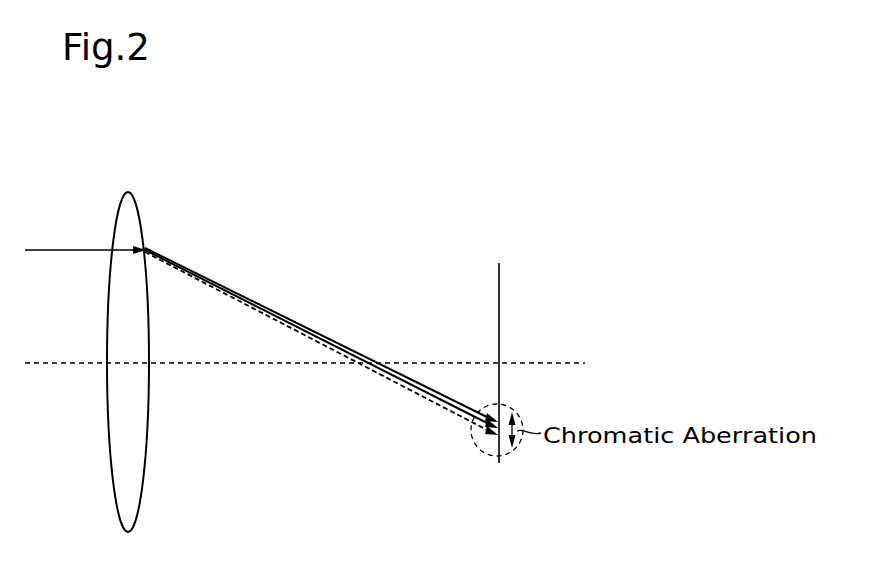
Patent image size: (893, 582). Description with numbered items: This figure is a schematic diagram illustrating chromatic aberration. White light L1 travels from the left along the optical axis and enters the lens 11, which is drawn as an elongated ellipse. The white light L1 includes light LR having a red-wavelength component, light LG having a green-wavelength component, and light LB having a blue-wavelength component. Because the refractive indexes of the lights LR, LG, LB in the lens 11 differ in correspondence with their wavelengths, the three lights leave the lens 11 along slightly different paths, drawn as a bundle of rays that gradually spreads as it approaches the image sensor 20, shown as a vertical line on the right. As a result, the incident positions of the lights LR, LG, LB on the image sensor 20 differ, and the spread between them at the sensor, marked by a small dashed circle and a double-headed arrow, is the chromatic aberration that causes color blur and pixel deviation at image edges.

The lens 11 is at (141, 225).
The image sensor 20 is at (497, 295).
The white light L1 is at (68, 248).
The light having a red-wavelength component LR is at (430, 389).
The light having a green-wavelength component LG is at (401, 378).
The light having a blue-wavelength component LB is at (409, 392).